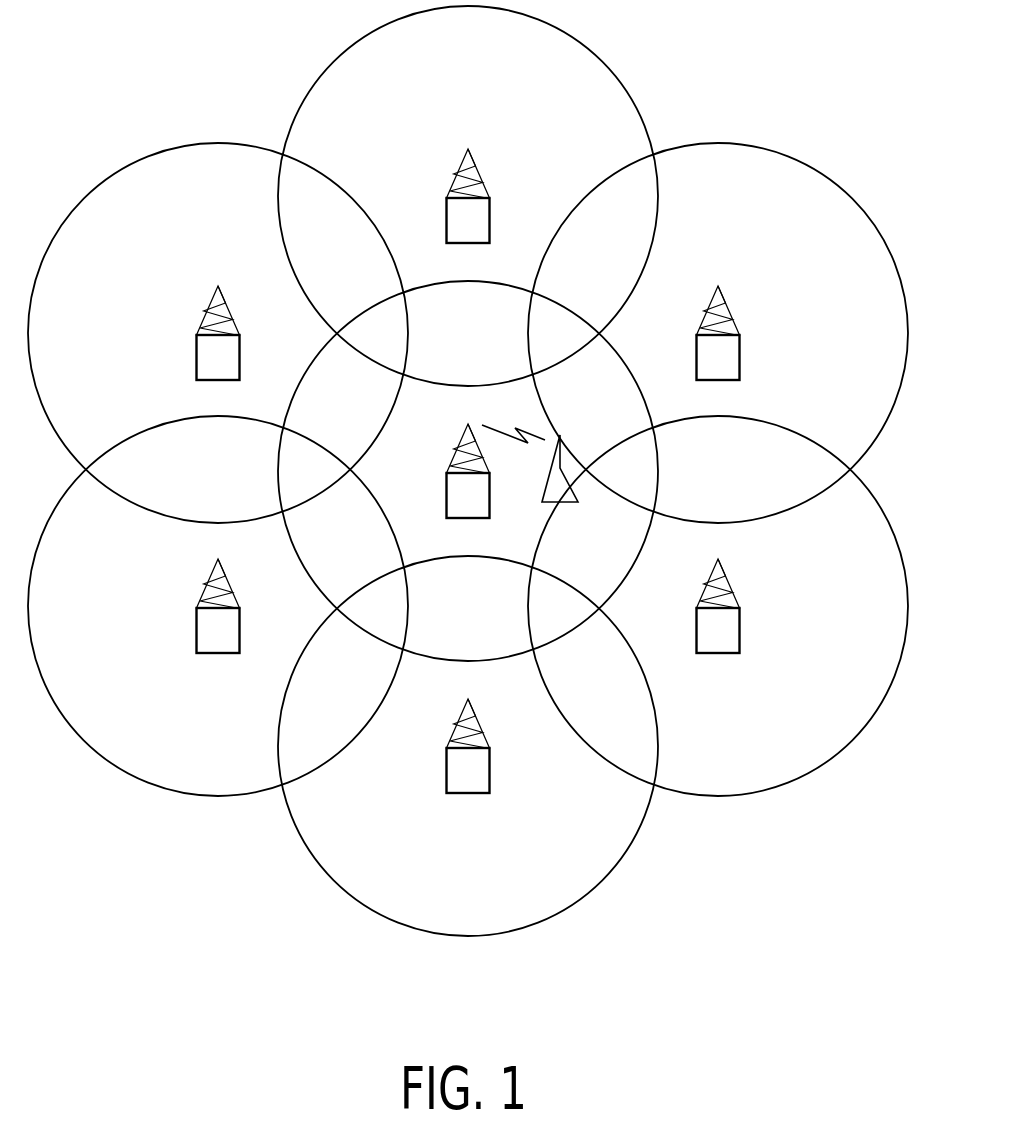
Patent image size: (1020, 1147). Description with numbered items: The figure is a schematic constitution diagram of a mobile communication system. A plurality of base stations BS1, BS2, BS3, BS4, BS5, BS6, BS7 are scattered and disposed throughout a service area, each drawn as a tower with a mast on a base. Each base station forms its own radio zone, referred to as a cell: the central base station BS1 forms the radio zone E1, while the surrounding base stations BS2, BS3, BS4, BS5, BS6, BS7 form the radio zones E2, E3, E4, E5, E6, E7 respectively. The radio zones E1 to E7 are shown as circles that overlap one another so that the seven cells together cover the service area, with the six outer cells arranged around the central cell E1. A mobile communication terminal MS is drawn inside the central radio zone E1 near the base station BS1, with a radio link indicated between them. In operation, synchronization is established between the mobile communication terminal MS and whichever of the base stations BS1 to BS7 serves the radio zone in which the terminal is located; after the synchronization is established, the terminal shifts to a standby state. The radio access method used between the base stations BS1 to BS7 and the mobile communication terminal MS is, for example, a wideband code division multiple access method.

The radio zone E1 is at (312, 550).
The radio zone E2 is at (593, 80).
The radio zone E3 is at (200, 160).
The radio zone E4 is at (198, 778).
The radio zone E5 is at (468, 922).
The radio zone E6 is at (732, 780).
The radio zone E7 is at (745, 158).
The base station BS1 is at (468, 489).
The base station BS2 is at (468, 214).
The base station BS3 is at (218, 351).
The base station BS4 is at (218, 624).
The base station BS5 is at (468, 764).
The base station BS6 is at (718, 624).
The base station BS7 is at (718, 351).
The mobile communication terminal MS is at (537, 483).